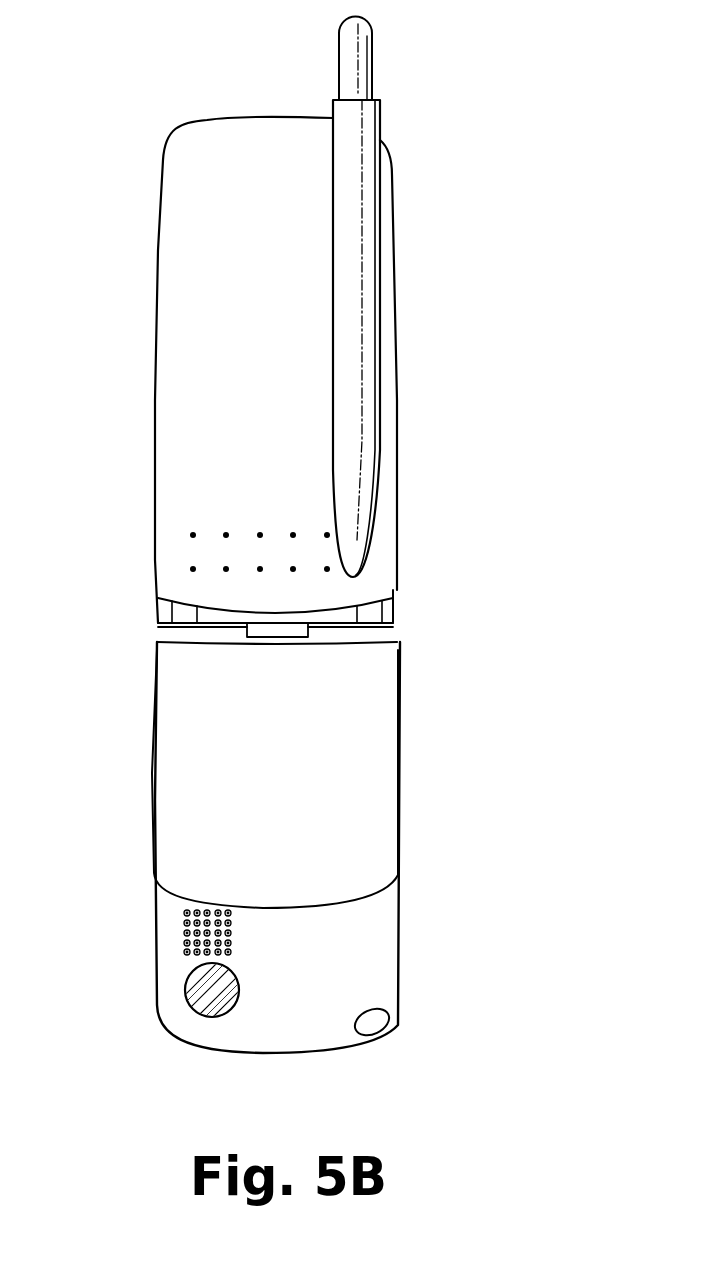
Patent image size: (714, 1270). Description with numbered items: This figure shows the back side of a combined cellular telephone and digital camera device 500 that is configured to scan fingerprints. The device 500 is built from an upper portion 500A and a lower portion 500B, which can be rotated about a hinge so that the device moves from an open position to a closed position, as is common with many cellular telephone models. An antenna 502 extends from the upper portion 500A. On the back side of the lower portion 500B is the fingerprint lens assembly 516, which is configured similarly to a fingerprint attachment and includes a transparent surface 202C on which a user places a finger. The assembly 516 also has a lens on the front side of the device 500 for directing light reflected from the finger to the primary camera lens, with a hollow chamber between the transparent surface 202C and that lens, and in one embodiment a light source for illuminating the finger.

The combined cellular telephone and digital camera device 500 is at (462, 79).
The upper portion 500A is at (407, 592).
The lower portion 500B is at (407, 1033).
The antenna 502 is at (355, 47).
The transparent surface 202C is at (208, 990).
The fingerprint lens assembly 516 is at (207, 1013).